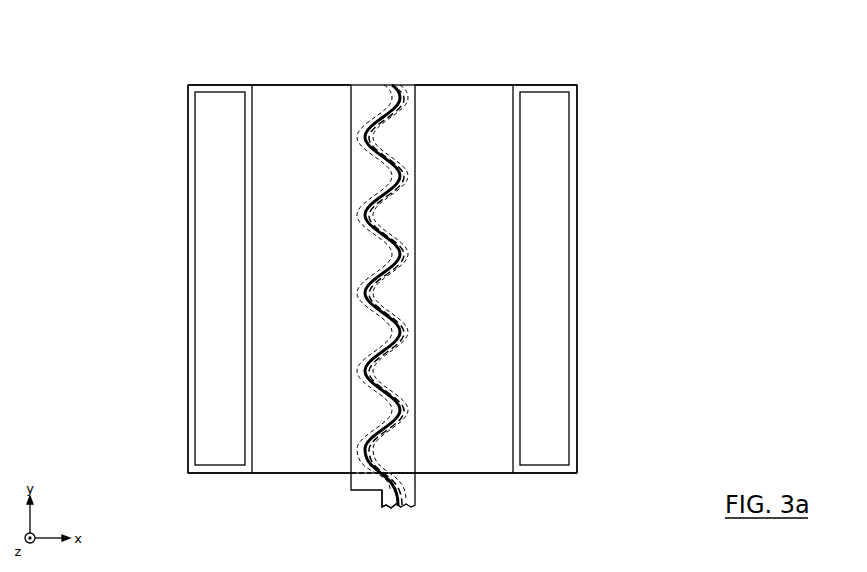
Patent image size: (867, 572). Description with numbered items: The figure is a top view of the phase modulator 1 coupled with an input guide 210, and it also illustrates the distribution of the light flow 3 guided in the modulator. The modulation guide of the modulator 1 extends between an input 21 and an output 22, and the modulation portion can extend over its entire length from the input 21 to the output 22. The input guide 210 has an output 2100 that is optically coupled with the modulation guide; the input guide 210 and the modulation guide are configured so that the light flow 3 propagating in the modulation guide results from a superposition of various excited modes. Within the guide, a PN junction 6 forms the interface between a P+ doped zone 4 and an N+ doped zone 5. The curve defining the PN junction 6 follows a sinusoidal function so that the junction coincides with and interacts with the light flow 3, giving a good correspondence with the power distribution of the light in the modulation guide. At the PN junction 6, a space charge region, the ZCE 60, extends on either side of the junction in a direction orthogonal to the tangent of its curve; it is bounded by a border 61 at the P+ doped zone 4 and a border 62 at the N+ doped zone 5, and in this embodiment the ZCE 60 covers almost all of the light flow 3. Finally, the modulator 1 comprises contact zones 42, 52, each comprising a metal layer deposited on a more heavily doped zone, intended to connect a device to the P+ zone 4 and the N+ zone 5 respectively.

The modulator 1 is at (151, 70).
The light flow 3 is at (406, 99).
The P+ doped zone 4 is at (362, 432).
The N+ doped zone 5 is at (410, 440).
The PN junction 6 is at (389, 268).
The input 21 is at (364, 477).
The output 22 is at (391, 85).
The contact zone 42 is at (225, 108).
The contact zone 52 is at (549, 108).
The space charge region (ZCE) 60 is at (358, 140).
The border 61 is at (376, 94).
The border 62 is at (392, 122).
The input guide 210 is at (388, 507).
The output 2100 is at (408, 473).